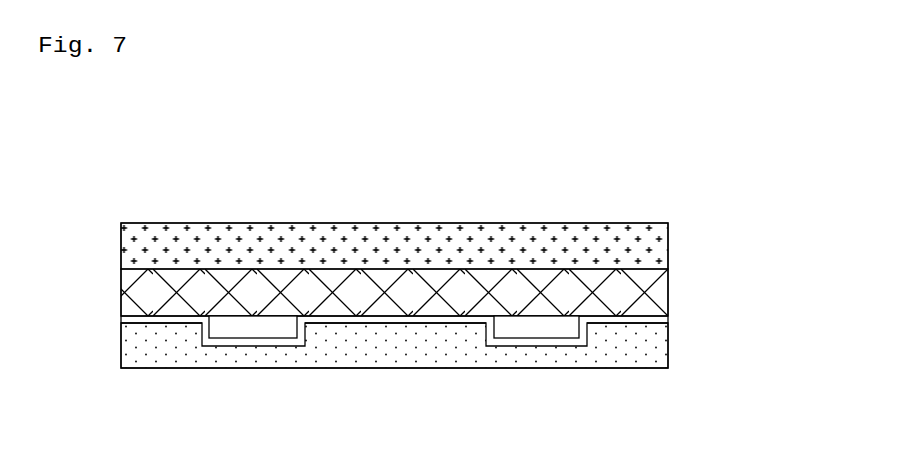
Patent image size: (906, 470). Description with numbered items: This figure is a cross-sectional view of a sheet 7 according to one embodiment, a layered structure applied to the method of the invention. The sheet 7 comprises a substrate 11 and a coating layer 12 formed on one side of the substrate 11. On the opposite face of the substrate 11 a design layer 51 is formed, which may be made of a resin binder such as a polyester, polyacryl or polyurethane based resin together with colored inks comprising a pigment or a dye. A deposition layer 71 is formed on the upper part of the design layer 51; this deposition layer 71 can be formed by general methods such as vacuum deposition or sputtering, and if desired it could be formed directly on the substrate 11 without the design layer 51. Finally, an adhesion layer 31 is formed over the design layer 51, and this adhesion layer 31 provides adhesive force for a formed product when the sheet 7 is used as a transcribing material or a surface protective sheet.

The sheet 7 is at (433, 184).
The coating layer 12 is at (668, 245).
The substrate 11 is at (668, 295).
The deposition layer 71 is at (121, 319).
The adhesion layer 31 is at (668, 345).
The design layer 51 is at (563, 347).